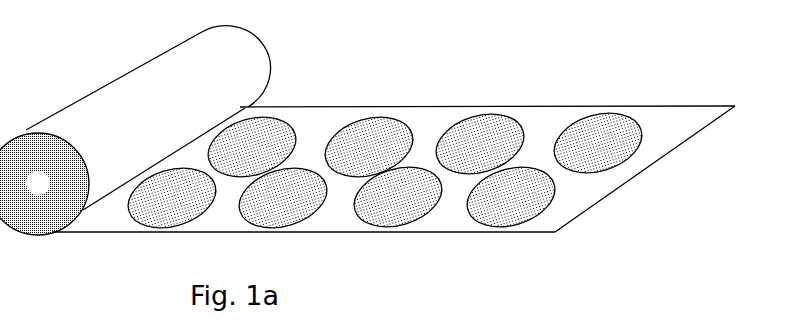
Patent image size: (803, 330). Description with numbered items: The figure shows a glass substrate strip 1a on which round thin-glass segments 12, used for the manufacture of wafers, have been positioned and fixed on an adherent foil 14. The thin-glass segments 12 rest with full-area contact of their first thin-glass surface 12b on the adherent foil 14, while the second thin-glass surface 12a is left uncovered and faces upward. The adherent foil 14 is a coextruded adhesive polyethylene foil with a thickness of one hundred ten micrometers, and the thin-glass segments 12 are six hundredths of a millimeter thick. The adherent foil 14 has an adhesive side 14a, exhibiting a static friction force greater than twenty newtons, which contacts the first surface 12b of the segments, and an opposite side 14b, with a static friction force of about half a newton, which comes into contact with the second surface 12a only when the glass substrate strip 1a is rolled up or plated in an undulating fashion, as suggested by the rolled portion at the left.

The glass substrate strip 1a is at (372, 134).
The thin-glass segments 12 is at (385, 155).
The second thin-glass surface 12a is at (368, 118).
The first thin-glass surface 12b is at (292, 120).
The adherent foil 14 is at (398, 174).
The adhesive side of the adherent foil 14a is at (673, 136).
The opposite side of the adherent foil 14b is at (576, 196).